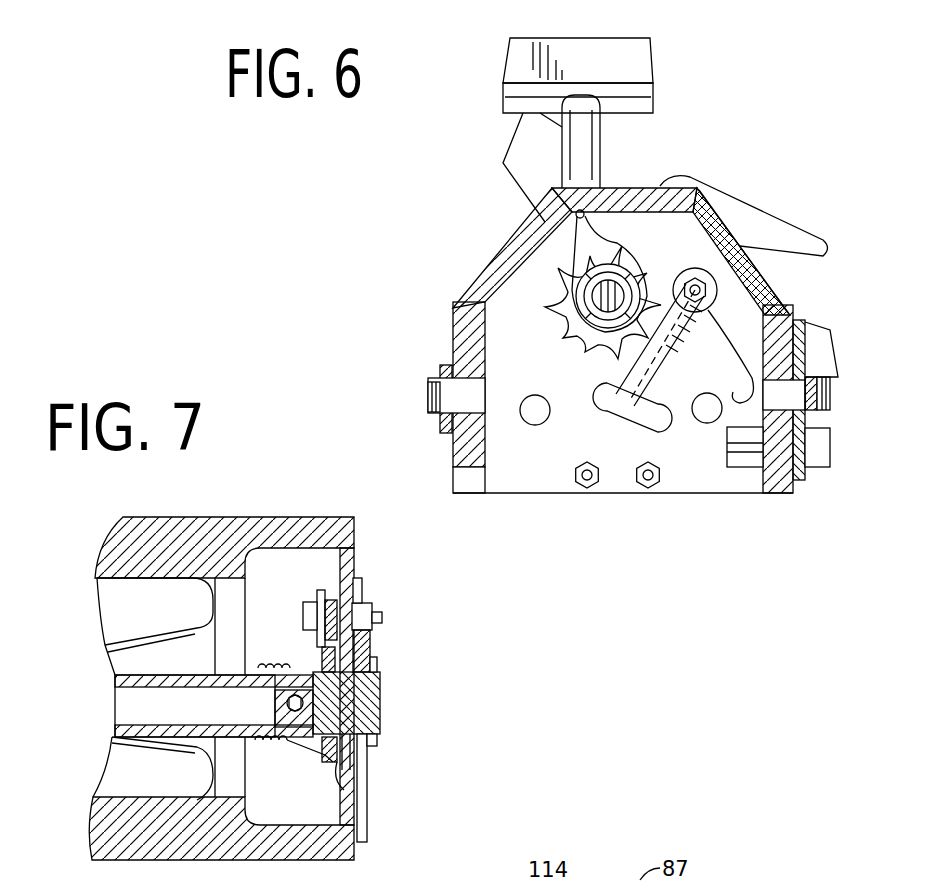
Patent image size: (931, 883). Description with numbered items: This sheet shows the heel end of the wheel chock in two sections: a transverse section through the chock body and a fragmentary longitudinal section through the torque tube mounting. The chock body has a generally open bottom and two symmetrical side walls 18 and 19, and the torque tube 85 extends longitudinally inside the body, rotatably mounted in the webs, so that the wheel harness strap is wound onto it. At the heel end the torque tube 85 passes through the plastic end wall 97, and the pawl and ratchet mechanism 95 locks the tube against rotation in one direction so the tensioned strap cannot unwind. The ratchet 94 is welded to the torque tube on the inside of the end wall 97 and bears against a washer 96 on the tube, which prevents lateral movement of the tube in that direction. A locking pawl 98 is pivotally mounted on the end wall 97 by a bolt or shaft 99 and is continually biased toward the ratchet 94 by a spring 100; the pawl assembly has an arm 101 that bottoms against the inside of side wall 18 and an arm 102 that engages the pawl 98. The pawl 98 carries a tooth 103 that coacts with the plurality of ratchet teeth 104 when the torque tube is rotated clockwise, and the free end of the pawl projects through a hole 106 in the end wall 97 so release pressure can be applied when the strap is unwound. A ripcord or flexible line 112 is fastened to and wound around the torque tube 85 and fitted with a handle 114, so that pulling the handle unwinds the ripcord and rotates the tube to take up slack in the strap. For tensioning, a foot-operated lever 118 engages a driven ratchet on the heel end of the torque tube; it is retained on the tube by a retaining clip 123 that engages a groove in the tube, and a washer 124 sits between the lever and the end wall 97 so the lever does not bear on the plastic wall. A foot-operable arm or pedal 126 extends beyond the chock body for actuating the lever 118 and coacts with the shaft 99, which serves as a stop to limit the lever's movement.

In FIG. 6, the side wall 18 is at (780, 457).
In FIG. 6, the side wall 19 is at (460, 453).
In FIG. 7, the torque tube 85 is at (190, 677).
In FIG. 6, the ratchet 94 is at (632, 262).
In FIG. 7, the ratchet 94 is at (330, 762).
In FIG. 7, the pawl and ratchet mechanism 95 is at (285, 630).
In FIG. 7, the washer 96 is at (340, 760).
In FIG. 6, the end wall 97 is at (513, 485).
In FIG. 7, the end wall 97 is at (352, 548).
In FIG. 6, the locking pawl 98 is at (700, 313).
In FIG. 6, the bolt or shaft 99 is at (700, 280).
In FIG. 7, the bolt or shaft 99 is at (382, 618).
In FIG. 6, the spring 100 is at (730, 322).
In FIG. 6, the arm 101 is at (800, 300).
In FIG. 6, the arm 102 is at (650, 420).
In FIG. 6, the tooth 103 is at (600, 369).
In FIG. 6, the ratchet teeth 104 is at (579, 303).
In FIG. 6, the hole 106 is at (600, 415).
In FIG. 6, the ripcord or flexible line 112 is at (590, 255).
In FIG. 7, the ripcord or flexible line 112 is at (262, 745).
In FIG. 6, the handle 114 is at (640, 50).
In FIG. 6, the foot-operated lever 118 is at (757, 200).
In FIG. 7, the foot-operated lever 118 is at (372, 808).
In FIG. 7, the retaining clip 123 is at (377, 658).
In FIG. 7, the washer 124 is at (380, 730).
In FIG. 6, the foot-operable arm or pedal 126 is at (780, 230).